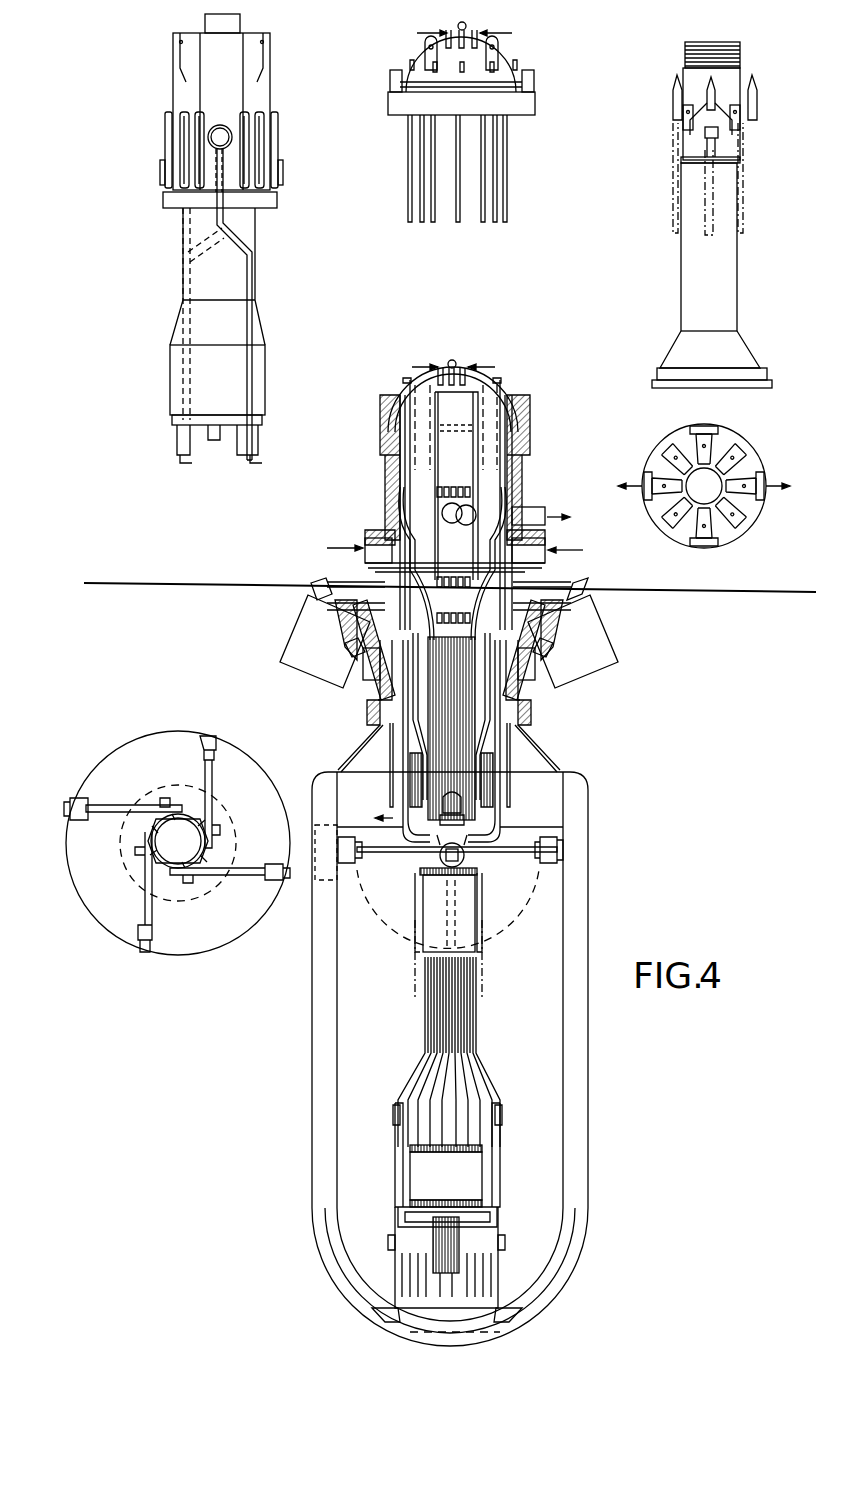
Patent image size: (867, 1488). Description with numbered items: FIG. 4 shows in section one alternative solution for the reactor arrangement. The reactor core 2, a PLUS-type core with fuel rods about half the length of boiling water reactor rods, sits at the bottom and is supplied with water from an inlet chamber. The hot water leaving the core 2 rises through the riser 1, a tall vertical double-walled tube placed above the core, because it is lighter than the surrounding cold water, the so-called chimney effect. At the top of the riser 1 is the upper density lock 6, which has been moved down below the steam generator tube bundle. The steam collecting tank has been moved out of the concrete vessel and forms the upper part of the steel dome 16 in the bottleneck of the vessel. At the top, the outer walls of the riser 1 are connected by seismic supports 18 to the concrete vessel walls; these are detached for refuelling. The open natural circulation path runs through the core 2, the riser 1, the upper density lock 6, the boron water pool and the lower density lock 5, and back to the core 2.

The steel dome 16 is at (492, 374).
The upper density lock 6 is at (495, 800).
The seismic supports 18 is at (519, 857).
The riser 1 is at (430, 923).
The reactor core 2 is at (415, 1172).
The lower density lock 5 is at (447, 1265).